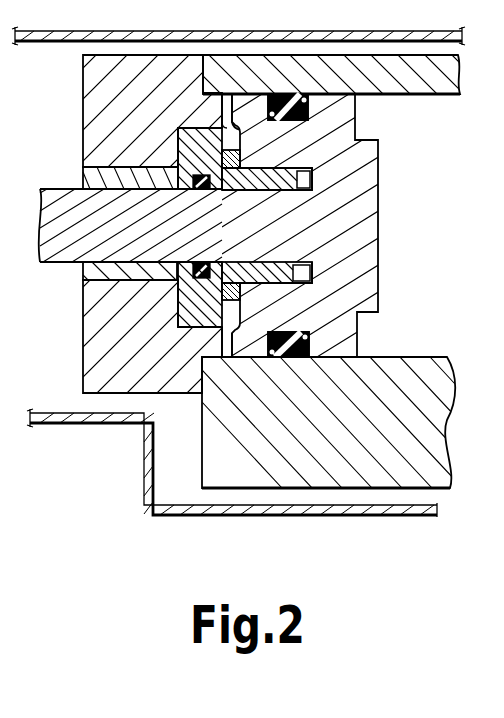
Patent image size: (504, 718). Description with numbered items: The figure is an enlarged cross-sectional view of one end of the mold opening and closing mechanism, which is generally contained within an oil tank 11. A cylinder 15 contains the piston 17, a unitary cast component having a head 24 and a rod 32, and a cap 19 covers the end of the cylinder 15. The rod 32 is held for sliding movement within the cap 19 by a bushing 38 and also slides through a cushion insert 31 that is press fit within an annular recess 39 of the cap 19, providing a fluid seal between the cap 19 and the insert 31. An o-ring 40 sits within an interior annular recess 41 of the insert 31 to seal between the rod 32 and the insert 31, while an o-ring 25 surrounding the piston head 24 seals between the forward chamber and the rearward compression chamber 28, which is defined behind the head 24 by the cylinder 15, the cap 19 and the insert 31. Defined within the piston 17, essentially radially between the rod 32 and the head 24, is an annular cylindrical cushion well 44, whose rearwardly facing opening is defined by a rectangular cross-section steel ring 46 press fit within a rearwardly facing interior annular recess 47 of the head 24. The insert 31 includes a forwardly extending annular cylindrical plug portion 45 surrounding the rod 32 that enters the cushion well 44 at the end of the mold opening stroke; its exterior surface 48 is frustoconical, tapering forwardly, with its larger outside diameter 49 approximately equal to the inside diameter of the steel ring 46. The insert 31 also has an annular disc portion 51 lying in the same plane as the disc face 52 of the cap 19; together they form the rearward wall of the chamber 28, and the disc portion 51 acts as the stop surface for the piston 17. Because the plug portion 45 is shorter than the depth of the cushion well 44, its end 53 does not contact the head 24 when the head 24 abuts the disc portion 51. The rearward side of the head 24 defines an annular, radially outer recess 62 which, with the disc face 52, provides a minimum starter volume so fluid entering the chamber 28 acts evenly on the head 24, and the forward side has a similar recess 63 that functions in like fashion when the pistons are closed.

The oil tank 11 is at (196, 30).
The cylinder 15 is at (386, 55).
The piston 17 is at (60, 188).
The cap 19 is at (83, 84).
The piston head 24 is at (380, 163).
The o-ring 25 is at (286, 360).
The rearward compression chamber 28 is at (223, 361).
The cushion insert 31 is at (203, 128).
The rod 32 is at (50, 233).
The bushing 38 is at (97, 285).
The annular recess 39 is at (181, 143).
The o-ring 40 is at (199, 261).
The interior annular recess 41 is at (200, 190).
The cushion well 44 is at (300, 180).
The plug portion 45 is at (265, 190).
The steel ring 46 is at (221, 158).
The interior annular recess 47 is at (234, 150).
The exterior surface 48 is at (284, 172).
The larger outside diameter 49 is at (227, 190).
The disc portion 51 is at (241, 300).
The disc face 52 is at (228, 351).
The end 53 is at (312, 181).
The annular radially outer recess 62 is at (211, 93).
The recess 63 is at (358, 108).